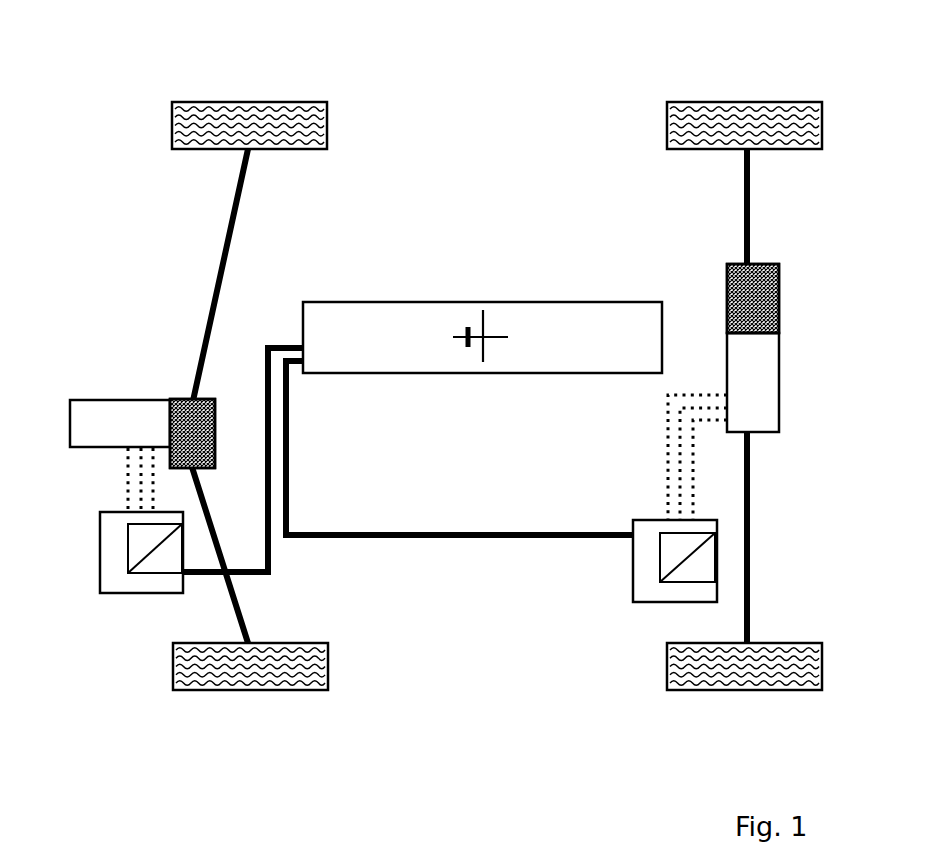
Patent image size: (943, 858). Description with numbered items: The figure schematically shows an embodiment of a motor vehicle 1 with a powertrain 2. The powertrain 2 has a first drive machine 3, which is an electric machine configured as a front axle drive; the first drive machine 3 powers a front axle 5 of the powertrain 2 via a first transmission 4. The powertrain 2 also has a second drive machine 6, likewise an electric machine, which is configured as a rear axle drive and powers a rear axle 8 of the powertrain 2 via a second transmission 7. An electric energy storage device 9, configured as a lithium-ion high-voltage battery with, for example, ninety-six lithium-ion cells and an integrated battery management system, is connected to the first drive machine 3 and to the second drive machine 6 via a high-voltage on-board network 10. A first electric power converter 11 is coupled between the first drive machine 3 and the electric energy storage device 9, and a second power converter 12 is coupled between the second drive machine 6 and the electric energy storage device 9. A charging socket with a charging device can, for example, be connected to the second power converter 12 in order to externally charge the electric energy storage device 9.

The motor vehicle 1 is at (526, 56).
The powertrain 2 is at (482, 150).
The first drive machine 3 is at (73, 398).
The first transmission 4 is at (187, 398).
The front axle 5 is at (240, 218).
The second drive machine 6 is at (779, 380).
The second transmission 7 is at (779, 290).
The rear axle 8 is at (750, 245).
The electric energy storage device 9 is at (508, 302).
The high-voltage on-board network 10 is at (483, 537).
The first electric power converter 11 is at (135, 593).
The second power converter 12 is at (633, 570).